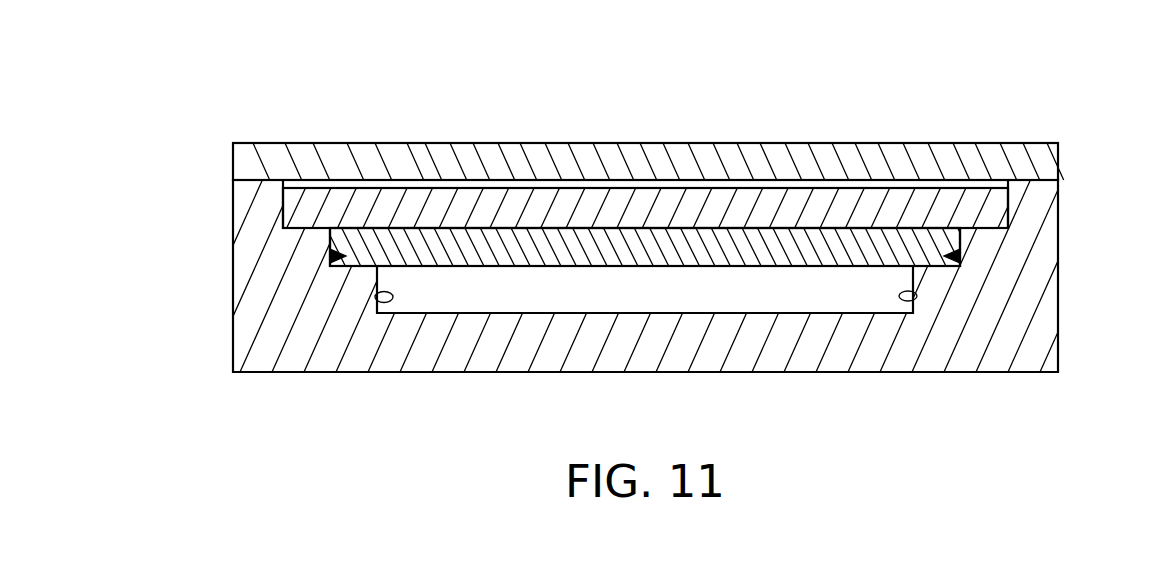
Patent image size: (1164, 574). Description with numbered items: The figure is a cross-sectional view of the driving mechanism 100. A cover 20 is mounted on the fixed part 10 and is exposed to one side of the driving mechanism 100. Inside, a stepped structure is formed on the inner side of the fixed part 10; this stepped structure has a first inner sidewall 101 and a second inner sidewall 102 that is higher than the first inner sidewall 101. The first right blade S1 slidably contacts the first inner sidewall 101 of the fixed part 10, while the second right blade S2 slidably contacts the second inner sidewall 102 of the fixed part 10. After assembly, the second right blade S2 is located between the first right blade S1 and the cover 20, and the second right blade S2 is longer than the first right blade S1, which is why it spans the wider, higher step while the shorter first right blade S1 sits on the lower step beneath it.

The driving mechanism 100 is at (152, 75).
The fixed part 10 is at (228, 196).
The cover 20 is at (1016, 131).
The second right blade S2 is at (518, 207).
The first right blade S1 is at (734, 248).
The second inner sidewall 102 is at (332, 256).
The first inner sidewall 101 is at (376, 298).